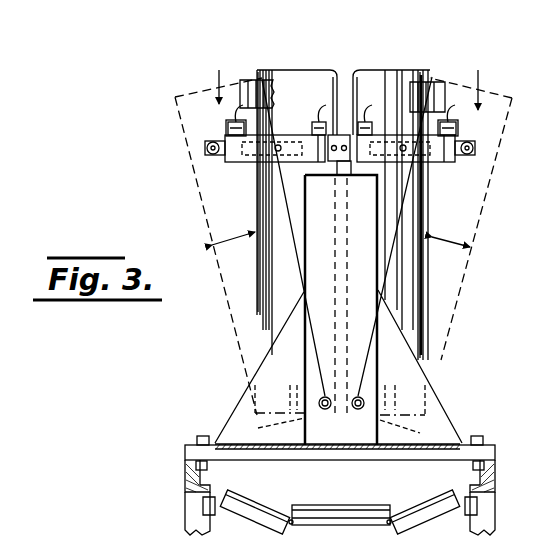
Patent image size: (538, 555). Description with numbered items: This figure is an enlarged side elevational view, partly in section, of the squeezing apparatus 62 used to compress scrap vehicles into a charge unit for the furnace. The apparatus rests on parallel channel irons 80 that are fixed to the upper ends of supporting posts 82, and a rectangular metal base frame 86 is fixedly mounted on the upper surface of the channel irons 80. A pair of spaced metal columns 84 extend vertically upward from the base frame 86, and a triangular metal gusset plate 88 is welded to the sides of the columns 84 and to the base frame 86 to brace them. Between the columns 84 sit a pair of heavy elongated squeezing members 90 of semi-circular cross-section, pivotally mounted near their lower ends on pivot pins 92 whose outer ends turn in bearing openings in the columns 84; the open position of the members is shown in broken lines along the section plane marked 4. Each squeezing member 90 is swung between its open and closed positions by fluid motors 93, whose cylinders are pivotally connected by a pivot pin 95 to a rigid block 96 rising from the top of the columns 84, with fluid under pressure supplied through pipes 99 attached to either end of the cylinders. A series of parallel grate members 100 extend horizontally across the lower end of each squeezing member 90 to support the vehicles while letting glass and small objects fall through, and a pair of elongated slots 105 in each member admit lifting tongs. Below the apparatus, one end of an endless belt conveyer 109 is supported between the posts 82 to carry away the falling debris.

The section line 4- 4 is at (343, 224).
The squeezing apparatus 62 is at (408, 58).
The channel irons 80 is at (185, 455).
The supporting posts 82 is at (190, 522).
The columns 84 is at (340, 460).
The base frame 86 is at (473, 444).
The gusset plate 88 is at (437, 420).
The squeezing members 90 is at (363, 77).
The pivot pins 92 is at (358, 410).
The fluid motors 93 is at (291, 132).
The pivot pin 95 is at (340, 145).
The rigid block 96 is at (346, 177).
The pipes 99 is at (228, 124).
The grate members 100 is at (290, 388).
The elongated slots 105 is at (257, 297).
The endless belt conveyer 109 is at (347, 510).